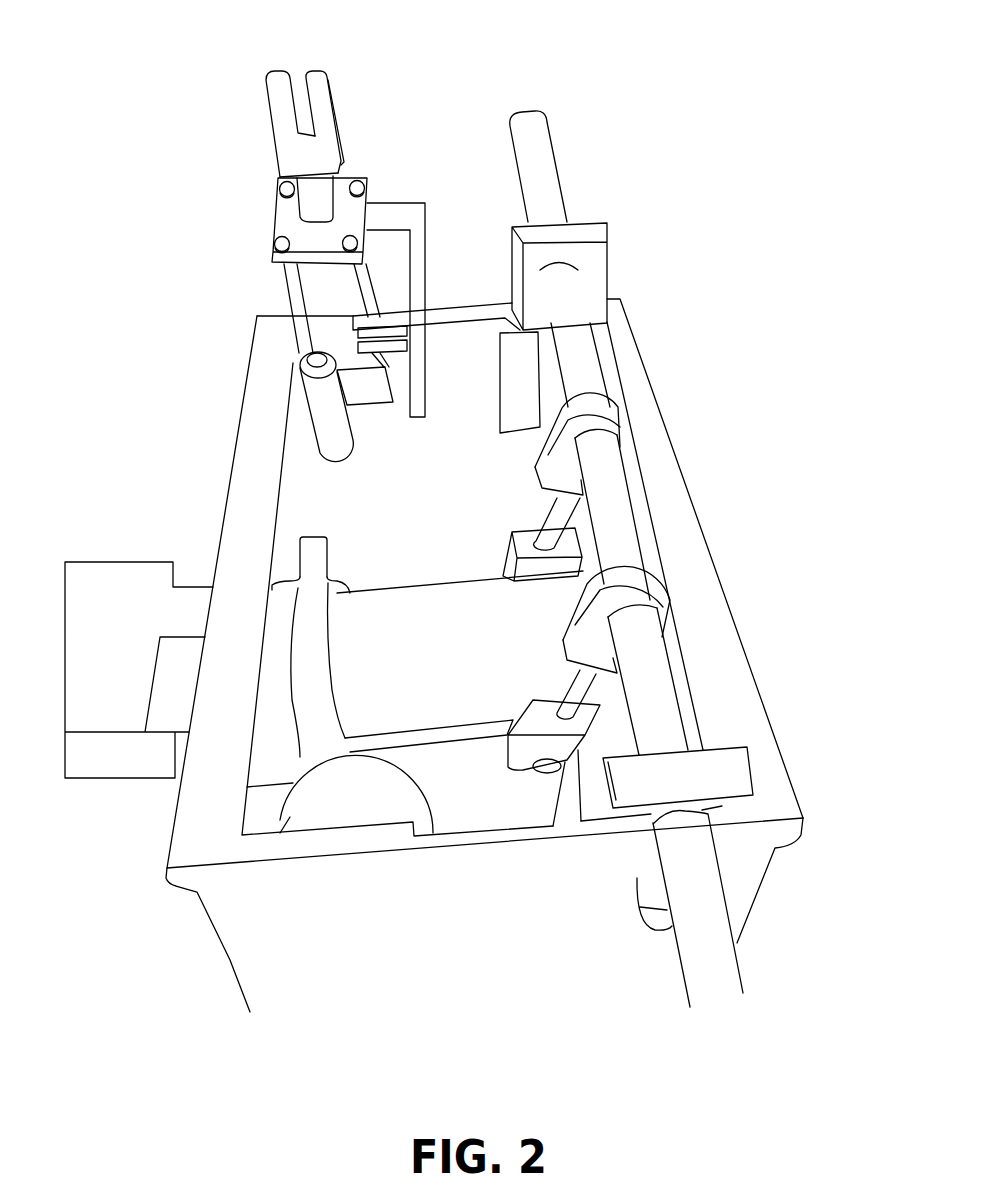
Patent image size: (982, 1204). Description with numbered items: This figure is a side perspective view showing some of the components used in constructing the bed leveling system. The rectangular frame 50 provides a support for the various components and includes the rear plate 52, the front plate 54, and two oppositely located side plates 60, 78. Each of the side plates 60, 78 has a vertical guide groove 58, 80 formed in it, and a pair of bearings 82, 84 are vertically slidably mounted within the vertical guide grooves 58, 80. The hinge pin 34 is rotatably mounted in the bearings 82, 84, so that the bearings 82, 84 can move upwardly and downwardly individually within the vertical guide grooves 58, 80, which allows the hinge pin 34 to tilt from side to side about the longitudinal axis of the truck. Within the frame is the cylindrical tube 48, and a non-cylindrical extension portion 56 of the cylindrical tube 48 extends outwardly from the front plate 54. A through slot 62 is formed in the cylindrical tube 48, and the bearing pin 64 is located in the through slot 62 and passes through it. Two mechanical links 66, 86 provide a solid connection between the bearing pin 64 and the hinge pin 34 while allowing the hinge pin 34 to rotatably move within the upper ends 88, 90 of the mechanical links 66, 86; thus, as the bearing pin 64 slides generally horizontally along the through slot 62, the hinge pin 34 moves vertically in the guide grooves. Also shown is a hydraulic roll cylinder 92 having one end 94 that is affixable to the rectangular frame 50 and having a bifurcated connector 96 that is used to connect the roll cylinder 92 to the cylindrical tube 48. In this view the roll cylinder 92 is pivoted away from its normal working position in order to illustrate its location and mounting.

The hinge pin 34 is at (542, 167).
The cylindrical tube 48 is at (426, 585).
The rectangular frame 50 is at (693, 475).
The rear plate 52 is at (737, 665).
The front plate 54 is at (198, 790).
The non-cylindrical extension portion 56 is at (123, 583).
The vertical guide groove 58 is at (637, 887).
The side plate 60 is at (438, 958).
The through slot 62 is at (458, 732).
The bearing pin 64 is at (547, 772).
The mechanical link 66 is at (573, 698).
The side plate 78 is at (465, 305).
The vertical guide groove 80 is at (602, 343).
The bearing 82 is at (733, 775).
The bearing 84 is at (598, 258).
The mechanical link 86 is at (560, 512).
The upper end 88 is at (668, 620).
The upper end 90 is at (620, 428).
The hydraulic roll cylinder 92 is at (320, 287).
The end 94 is at (323, 110).
The bifurcated connector 96 is at (277, 101).